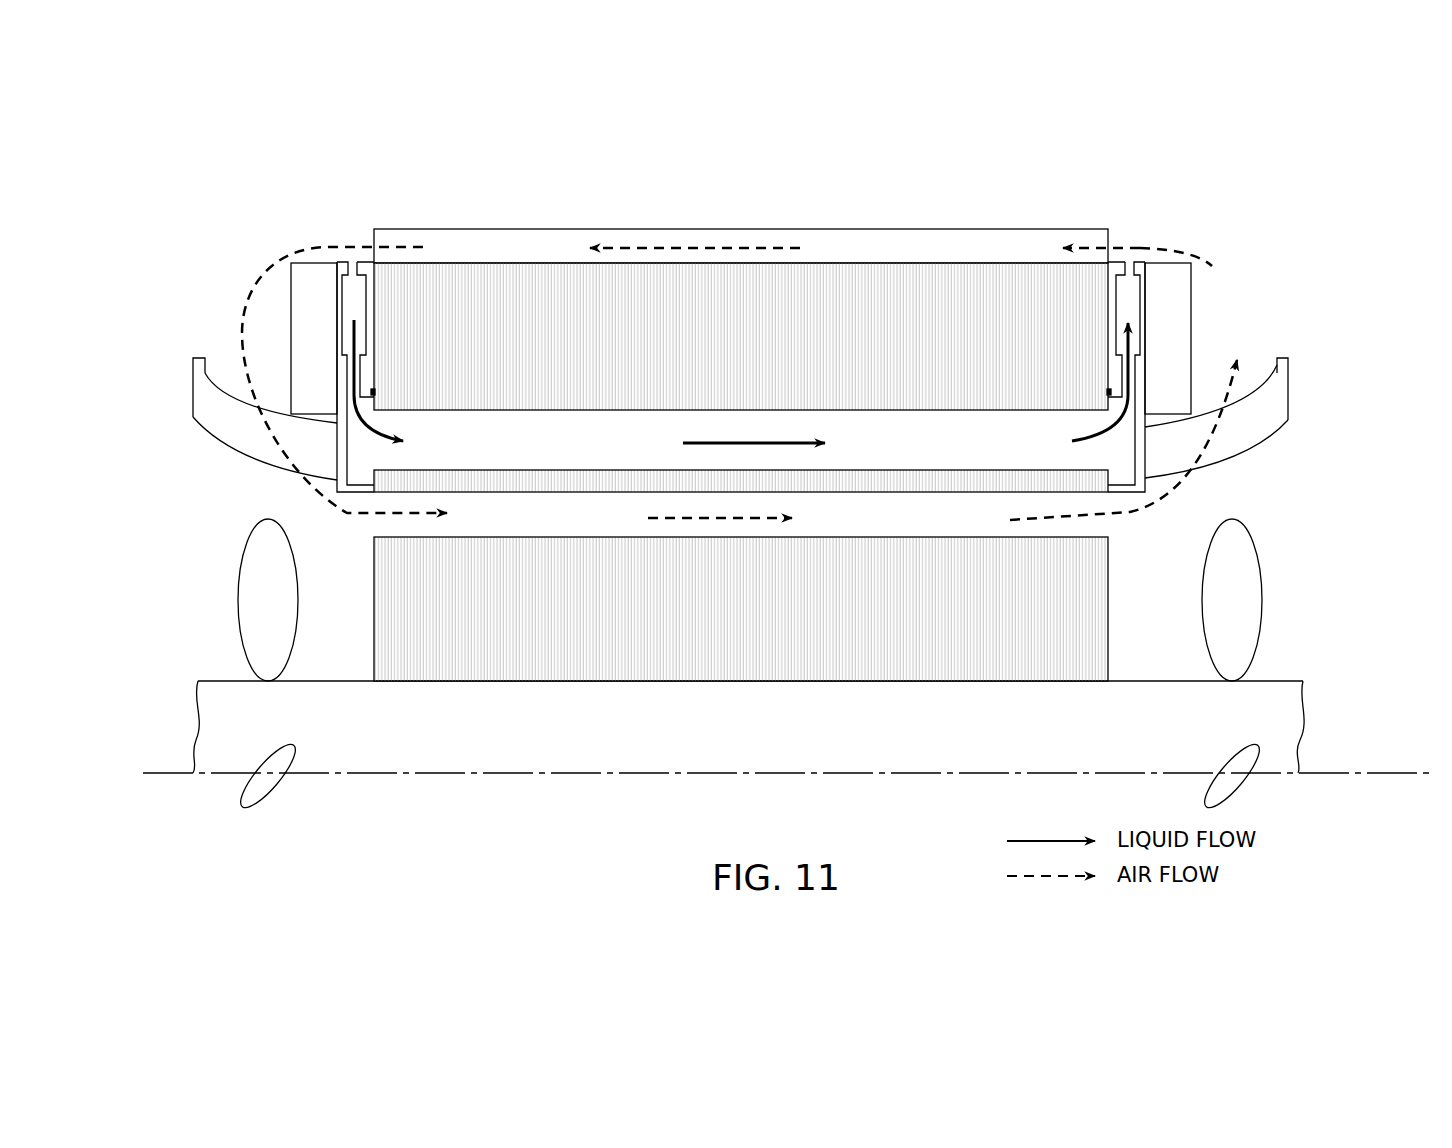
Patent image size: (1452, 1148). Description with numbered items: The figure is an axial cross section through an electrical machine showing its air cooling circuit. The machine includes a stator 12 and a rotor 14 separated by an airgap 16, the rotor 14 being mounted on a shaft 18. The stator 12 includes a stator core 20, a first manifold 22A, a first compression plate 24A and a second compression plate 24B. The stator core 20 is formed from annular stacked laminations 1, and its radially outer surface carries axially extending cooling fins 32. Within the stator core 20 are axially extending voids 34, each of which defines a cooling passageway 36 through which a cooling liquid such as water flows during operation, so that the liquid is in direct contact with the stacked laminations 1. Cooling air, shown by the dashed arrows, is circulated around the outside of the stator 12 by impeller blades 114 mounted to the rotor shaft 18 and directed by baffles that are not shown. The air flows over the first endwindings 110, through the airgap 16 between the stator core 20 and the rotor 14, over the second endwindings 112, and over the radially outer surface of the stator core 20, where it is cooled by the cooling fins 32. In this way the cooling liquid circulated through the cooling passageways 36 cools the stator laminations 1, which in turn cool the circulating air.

The stacked laminations 1 is at (828, 283).
The stator 12 is at (1276, 163).
The rotor 14 is at (1155, 557).
The airgap 16 is at (368, 531).
The shaft 18 is at (1278, 697).
The stator core 20 is at (970, 275).
The first manifold 22A is at (342, 377).
The first compression plate 24A is at (313, 297).
The second compression plate 24B is at (1168, 292).
The cooling fins 32 is at (487, 245).
The voids 34 is at (644, 446).
The cooling passageway 36 is at (820, 470).
The first endwindings 110 is at (217, 423).
The second endwindings 112 is at (1265, 420).
The impeller blades 114 is at (1240, 565).